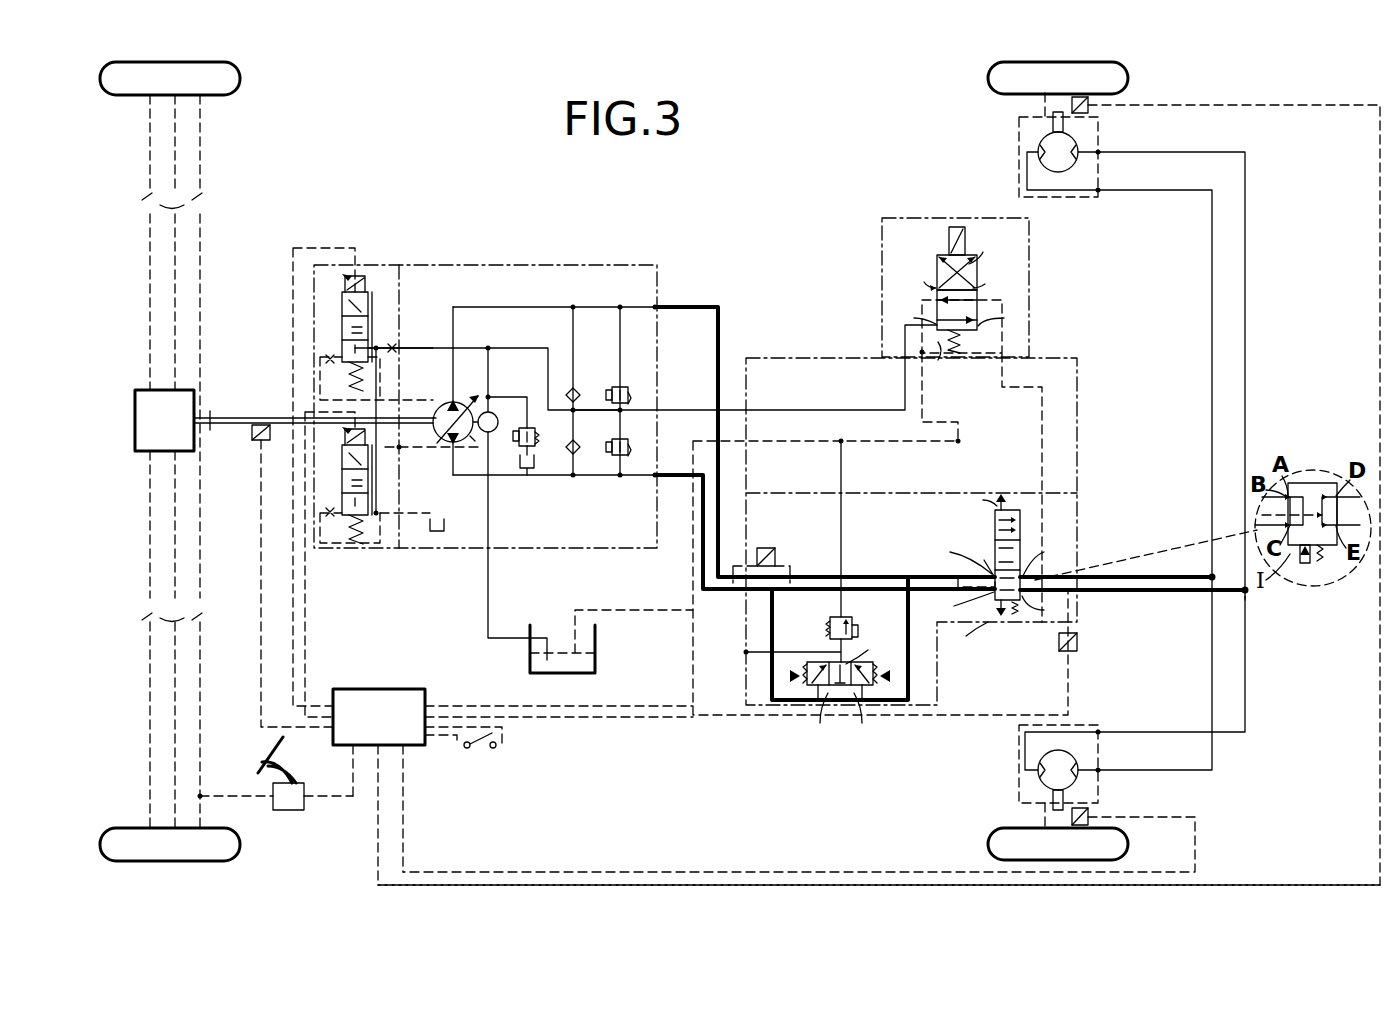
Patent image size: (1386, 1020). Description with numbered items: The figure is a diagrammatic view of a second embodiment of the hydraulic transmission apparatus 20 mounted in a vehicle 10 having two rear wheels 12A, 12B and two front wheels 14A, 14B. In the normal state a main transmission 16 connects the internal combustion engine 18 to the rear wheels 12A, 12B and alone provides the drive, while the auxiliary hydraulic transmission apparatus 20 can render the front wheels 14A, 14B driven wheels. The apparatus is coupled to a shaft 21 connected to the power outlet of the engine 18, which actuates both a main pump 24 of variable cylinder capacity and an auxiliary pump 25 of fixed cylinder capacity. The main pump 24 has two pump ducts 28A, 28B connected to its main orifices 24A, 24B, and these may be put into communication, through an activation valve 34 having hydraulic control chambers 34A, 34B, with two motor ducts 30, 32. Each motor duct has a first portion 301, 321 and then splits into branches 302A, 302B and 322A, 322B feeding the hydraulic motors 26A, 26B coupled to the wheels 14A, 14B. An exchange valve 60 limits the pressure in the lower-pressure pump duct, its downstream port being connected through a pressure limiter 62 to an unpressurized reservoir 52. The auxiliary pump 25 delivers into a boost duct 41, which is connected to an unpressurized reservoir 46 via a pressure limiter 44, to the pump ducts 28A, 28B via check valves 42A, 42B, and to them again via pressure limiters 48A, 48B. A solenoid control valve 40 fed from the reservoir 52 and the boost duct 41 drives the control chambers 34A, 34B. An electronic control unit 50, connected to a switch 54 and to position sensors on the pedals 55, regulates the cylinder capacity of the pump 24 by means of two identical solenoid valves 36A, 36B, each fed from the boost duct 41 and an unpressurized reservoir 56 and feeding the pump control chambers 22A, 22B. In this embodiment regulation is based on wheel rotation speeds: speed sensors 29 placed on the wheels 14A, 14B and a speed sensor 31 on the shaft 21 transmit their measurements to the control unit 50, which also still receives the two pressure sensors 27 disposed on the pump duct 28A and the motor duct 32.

The vehicle 10 is at (465, 790).
The rear wheel 12A is at (240, 78).
The rear wheel 12B is at (240, 845).
The front wheel 14A is at (1128, 78).
The front wheel 14B is at (1128, 845).
The main transmission 16 is at (300, 198).
The internal combustion engine 18 is at (177, 440).
The hydraulic transmission apparatus 20 is at (735, 740).
The shaft 21 is at (249, 415).
The hydraulic control chamber 22A is at (438, 410).
The hydraulic control chamber 22B is at (475, 443).
The main pump 24 is at (441, 403).
The main orifice 24A is at (456, 400).
The main orifice 24B is at (452, 442).
The auxiliary pump 25 is at (491, 412).
The hydraulic motor 26A is at (1068, 142).
The hydraulic motor 26B is at (1038, 776).
The pressure sensor 27 is at (766, 548).
The pump duct 28A is at (714, 572).
The pump duct 28B is at (704, 600).
The speed sensor 29 is at (1080, 86).
The motor duct 30 is at (1115, 574).
The first portion 301 is at (1184, 564).
The branch 302A is at (1212, 350).
The branch 302B is at (1212, 664).
The speed sensor 31 is at (250, 440).
The motor duct 32 is at (1122, 597).
The first portion 321 is at (1234, 600).
The branch 322A is at (1246, 350).
The branch 322B is at (1246, 664).
The activation valve 34 is at (1035, 542).
The hydraulic control chamber 34A is at (1026, 486).
The hydraulic control chamber 34B is at (1004, 612).
The solenoid valve 36A is at (350, 302).
The solenoid valve 36B is at (366, 520).
The control valve 40 is at (985, 265).
The boost duct 41 is at (586, 417).
The check valve 42A is at (580, 390).
The check valve 42B is at (576, 455).
The pressure limiter 44 is at (537, 450).
The unpressurized reservoir 46 is at (518, 466).
The pressure limiter 48A is at (628, 392).
The pressure limiter 48B is at (622, 456).
The electronic control unit 50 is at (392, 730).
The unpressurized reservoir 52 is at (528, 662).
The switch 54 is at (485, 748).
The pedal 55 is at (304, 800).
The unpressurized reservoir 56 is at (437, 533).
The exchange valve 60 is at (930, 680).
The pressure limiter 62 is at (830, 619).